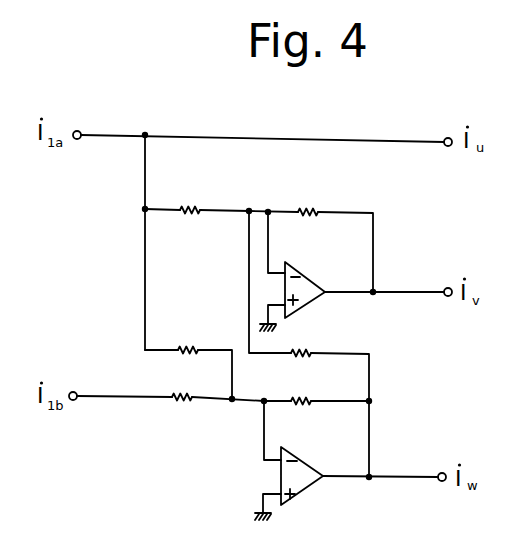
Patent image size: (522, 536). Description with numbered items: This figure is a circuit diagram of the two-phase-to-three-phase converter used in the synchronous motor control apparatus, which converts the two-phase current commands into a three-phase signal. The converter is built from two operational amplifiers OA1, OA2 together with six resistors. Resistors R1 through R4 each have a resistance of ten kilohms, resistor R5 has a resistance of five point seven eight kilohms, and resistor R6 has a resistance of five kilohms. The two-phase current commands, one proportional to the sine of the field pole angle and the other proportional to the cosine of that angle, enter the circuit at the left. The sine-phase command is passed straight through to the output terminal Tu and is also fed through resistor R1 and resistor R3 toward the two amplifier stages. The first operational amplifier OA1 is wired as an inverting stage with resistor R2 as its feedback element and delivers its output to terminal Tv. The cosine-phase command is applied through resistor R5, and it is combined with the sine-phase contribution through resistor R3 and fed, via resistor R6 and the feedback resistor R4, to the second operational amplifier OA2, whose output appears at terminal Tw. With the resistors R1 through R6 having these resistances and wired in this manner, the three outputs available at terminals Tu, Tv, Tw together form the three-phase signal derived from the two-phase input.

The resistor R1 is at (196, 210).
The resistor R2 is at (311, 236).
The resistor R3 is at (188, 360).
The resistor R4 is at (309, 344).
The resistor R5 is at (170, 400).
The resistor R6 is at (316, 402).
The operational amplifier OA1 is at (306, 281).
The operational amplifier OA2 is at (305, 469).
The terminal Tu is at (434, 132).
The terminal Tv is at (434, 283).
The terminal Tw is at (429, 468).